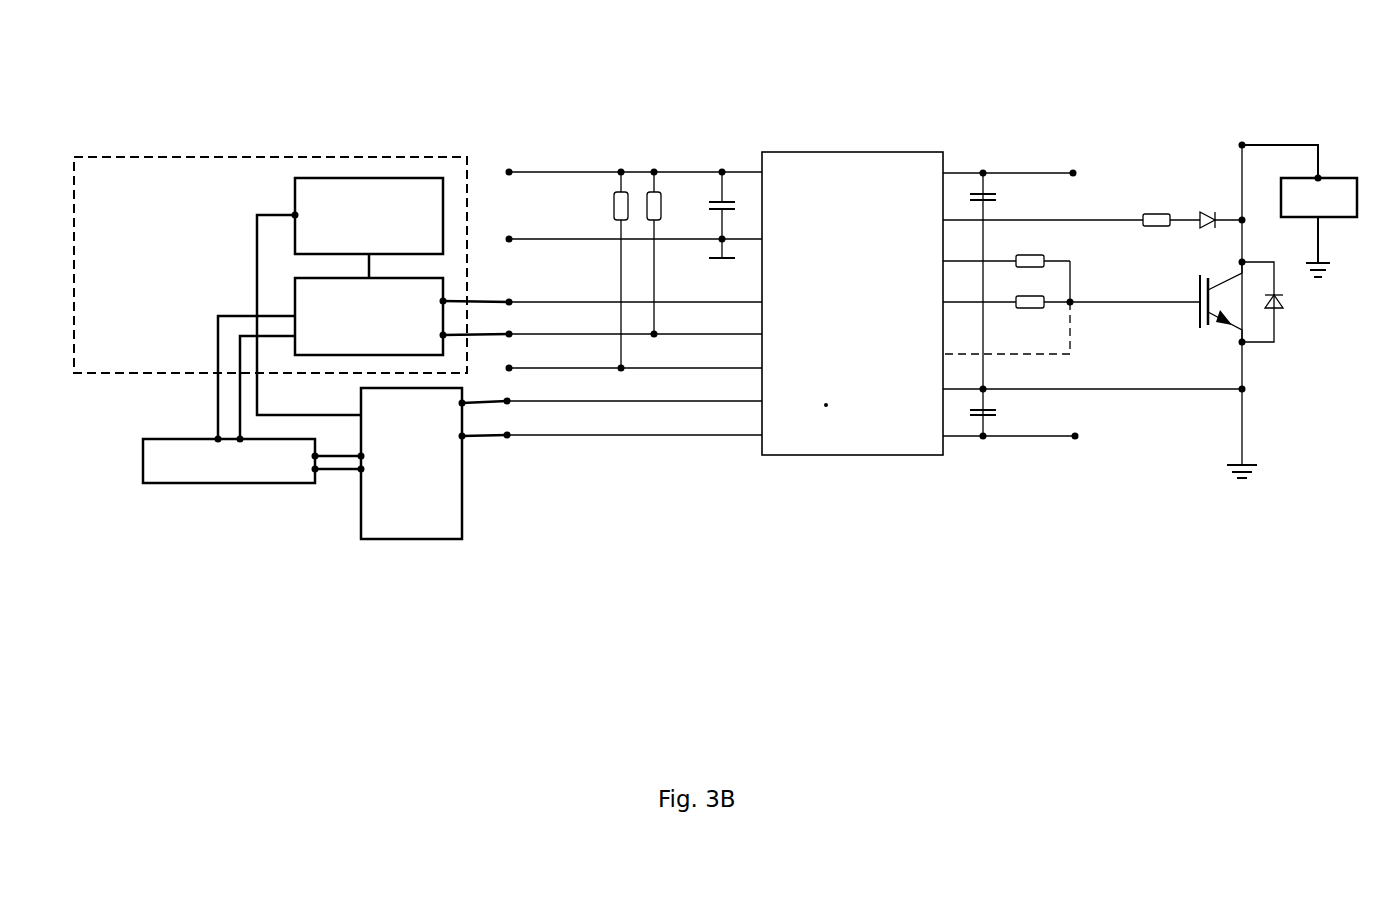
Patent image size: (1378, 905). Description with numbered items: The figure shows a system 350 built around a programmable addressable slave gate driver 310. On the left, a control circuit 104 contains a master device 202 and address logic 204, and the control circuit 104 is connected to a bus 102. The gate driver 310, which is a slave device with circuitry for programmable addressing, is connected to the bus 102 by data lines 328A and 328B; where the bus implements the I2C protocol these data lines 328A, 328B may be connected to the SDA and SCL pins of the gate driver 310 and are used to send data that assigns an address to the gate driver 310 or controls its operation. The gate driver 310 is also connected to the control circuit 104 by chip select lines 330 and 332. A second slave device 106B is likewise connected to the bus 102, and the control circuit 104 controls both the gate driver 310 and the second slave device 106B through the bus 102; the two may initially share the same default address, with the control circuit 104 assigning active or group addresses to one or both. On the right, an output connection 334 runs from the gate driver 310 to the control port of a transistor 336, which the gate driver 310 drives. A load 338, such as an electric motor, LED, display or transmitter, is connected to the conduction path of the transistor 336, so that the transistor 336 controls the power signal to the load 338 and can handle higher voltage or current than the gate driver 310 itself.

The system 350 is at (792, 55).
The control circuit 104 is at (233, 154).
The master device 202 is at (372, 178).
The address logic 204 is at (295, 295).
The second slave device 106B is at (278, 485).
The bus 102 is at (433, 542).
The data line 328B is at (568, 407).
The data line 328A is at (672, 442).
The chip select line 332 is at (596, 296).
The chip select line 330 is at (600, 335).
The gate driver 310 is at (842, 157).
The output connection 334 is at (1093, 300).
The transistor 336 is at (1198, 308).
The load 338 is at (1350, 178).